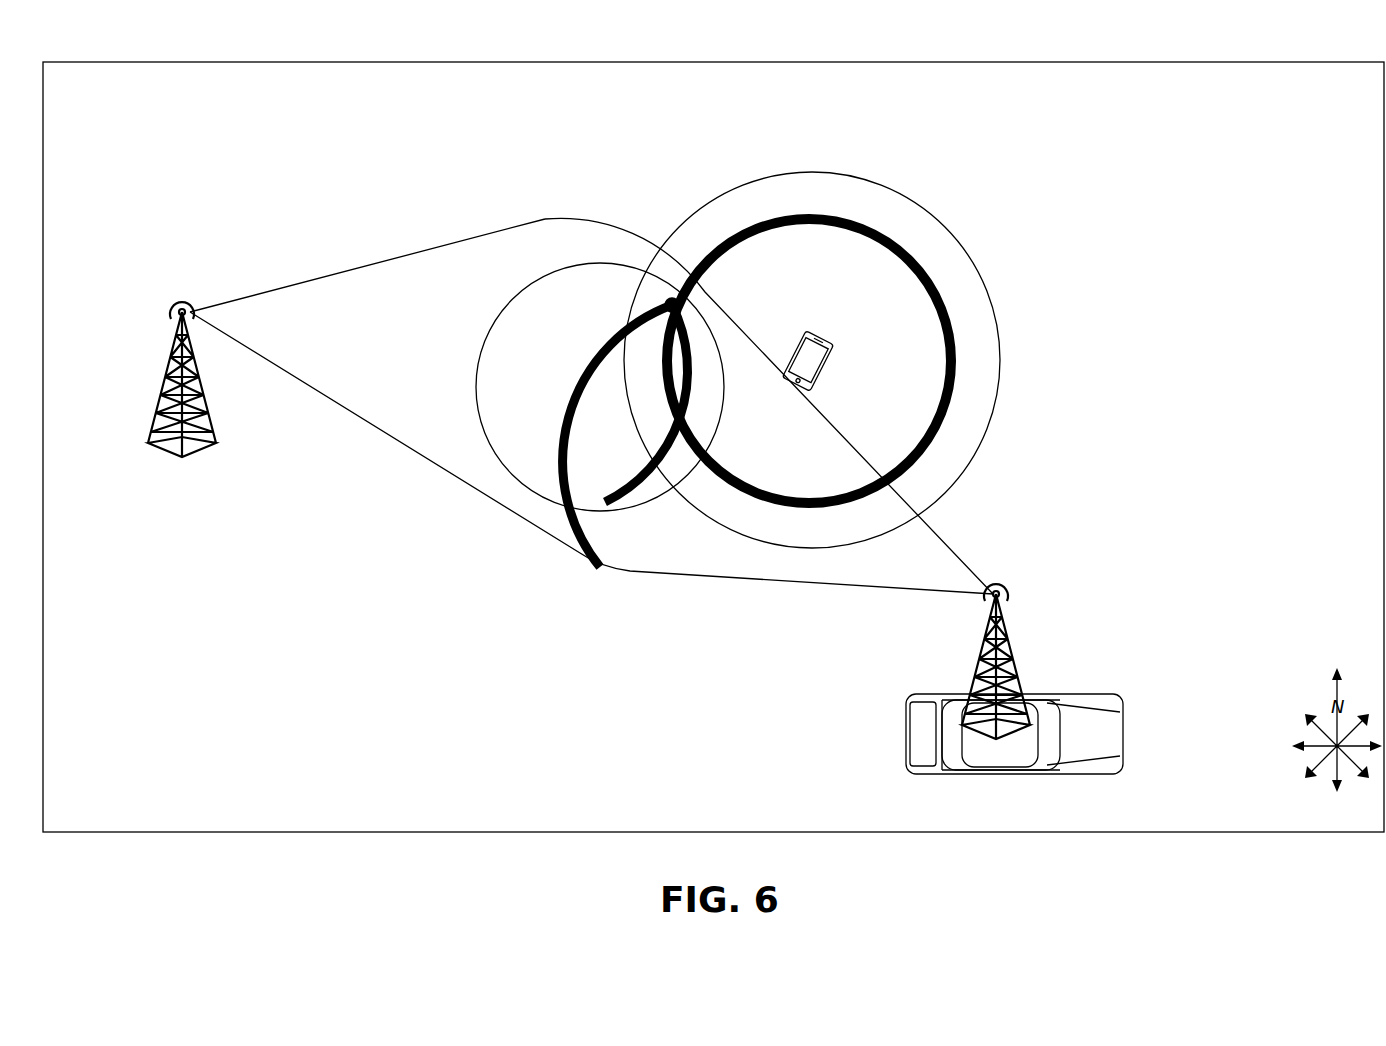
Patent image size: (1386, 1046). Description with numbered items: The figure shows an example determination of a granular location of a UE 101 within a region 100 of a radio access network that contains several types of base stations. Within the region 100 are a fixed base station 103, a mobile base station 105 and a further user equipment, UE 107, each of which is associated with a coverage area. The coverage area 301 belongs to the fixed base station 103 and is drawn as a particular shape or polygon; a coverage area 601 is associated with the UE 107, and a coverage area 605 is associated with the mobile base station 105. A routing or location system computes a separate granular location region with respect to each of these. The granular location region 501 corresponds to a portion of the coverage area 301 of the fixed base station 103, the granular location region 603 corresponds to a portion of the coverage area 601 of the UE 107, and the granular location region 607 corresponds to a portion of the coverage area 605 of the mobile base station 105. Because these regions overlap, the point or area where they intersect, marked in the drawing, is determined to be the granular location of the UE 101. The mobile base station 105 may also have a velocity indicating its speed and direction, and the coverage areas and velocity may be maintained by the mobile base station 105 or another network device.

The region 100 is at (128, 62).
The UE 101 is at (672, 305).
The fixed base station 103 is at (240, 478).
The mobile base station 105 is at (1012, 653).
The UE 107 is at (835, 359).
The coverage area 301 is at (372, 265).
The granular location region 501 is at (631, 244).
The coverage area 601 is at (955, 237).
The granular location region 603 is at (952, 346).
The coverage area 605 is at (720, 578).
The granular location region 607 is at (590, 542).